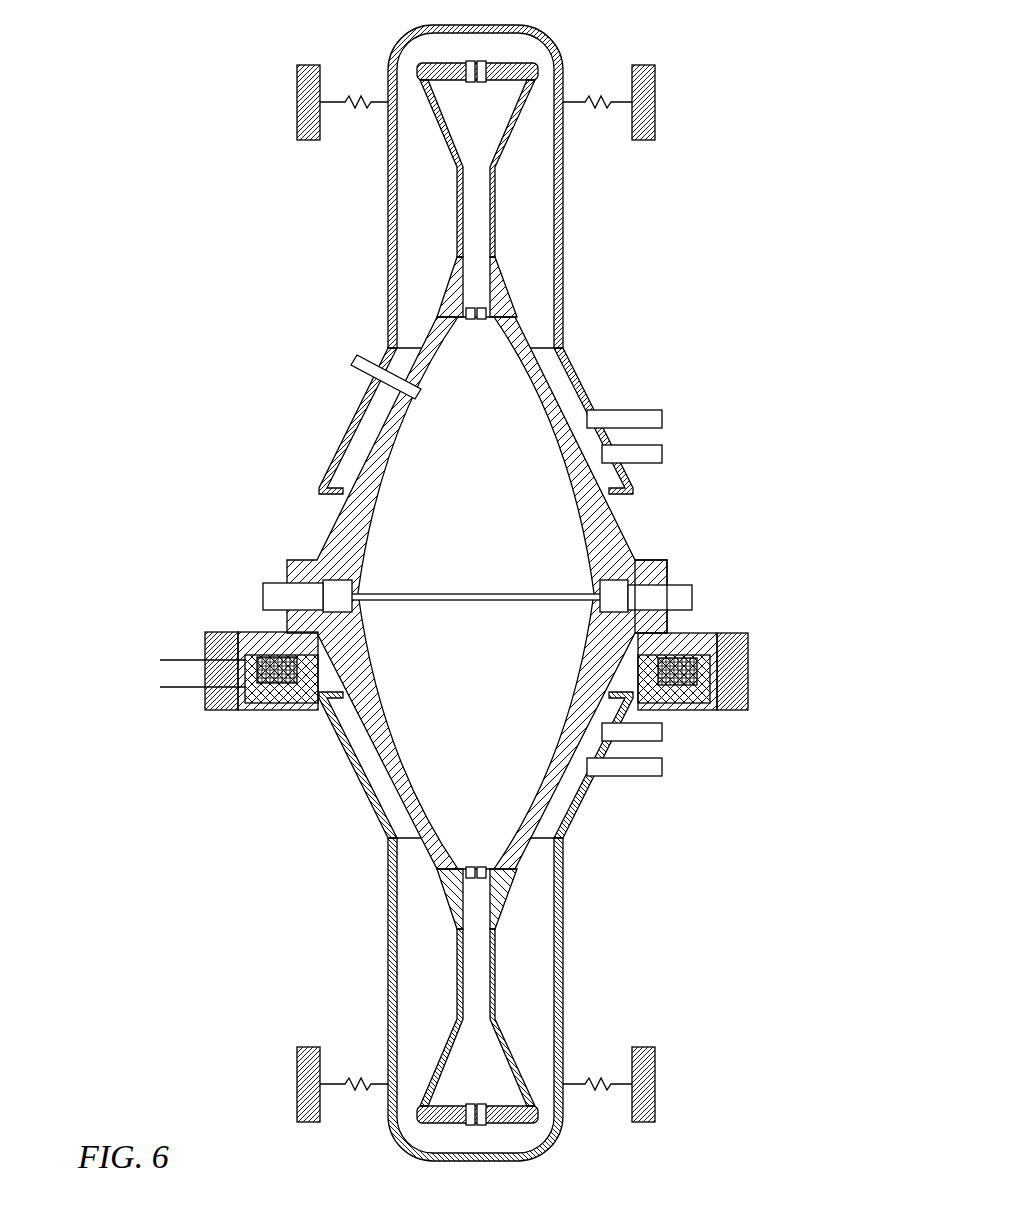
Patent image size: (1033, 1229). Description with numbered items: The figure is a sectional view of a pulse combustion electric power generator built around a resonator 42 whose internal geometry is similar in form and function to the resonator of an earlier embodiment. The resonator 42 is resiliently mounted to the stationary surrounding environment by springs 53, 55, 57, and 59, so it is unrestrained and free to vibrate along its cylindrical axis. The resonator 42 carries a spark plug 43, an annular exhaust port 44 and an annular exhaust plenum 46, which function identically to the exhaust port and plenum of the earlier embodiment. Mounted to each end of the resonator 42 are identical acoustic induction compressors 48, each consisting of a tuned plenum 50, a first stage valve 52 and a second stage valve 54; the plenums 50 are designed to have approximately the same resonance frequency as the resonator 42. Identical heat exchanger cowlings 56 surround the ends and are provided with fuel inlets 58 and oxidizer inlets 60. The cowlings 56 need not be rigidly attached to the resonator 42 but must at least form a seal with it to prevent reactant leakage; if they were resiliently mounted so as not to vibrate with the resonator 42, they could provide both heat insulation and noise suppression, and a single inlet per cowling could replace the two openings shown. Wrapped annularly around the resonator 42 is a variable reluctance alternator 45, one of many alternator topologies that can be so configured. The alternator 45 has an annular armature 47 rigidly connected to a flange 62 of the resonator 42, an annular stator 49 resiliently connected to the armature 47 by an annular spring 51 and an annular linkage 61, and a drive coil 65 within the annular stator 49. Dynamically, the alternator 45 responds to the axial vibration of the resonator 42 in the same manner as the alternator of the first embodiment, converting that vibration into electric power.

The resonator 42 is at (558, 795).
The spark plug 43 is at (353, 359).
The annular exhaust port 44 is at (420, 597).
The variable reluctance alternator 45 is at (749, 667).
The annular exhaust plenum 46 is at (343, 583).
The annular armature 47 is at (693, 633).
The acoustic induction compressor 48 is at (441, 268).
The annular stator 49 is at (713, 692).
The tuned plenum 50 is at (478, 155).
The annular spring 51 is at (230, 710).
The first stage valve 52 is at (473, 80).
The spring 53 is at (360, 88).
The second stage valve 54 is at (477, 322).
The spring 55 is at (593, 88).
The heat exchanger cowling 56 is at (335, 448).
The spring 57 is at (360, 1093).
The fuel inlet 58 is at (668, 453).
The spring 59 is at (593, 1093).
The oxidizer inlet 60 is at (668, 415).
The annular linkage 61 is at (205, 645).
The flange 62 is at (667, 570).
The drive coil 65 is at (267, 657).